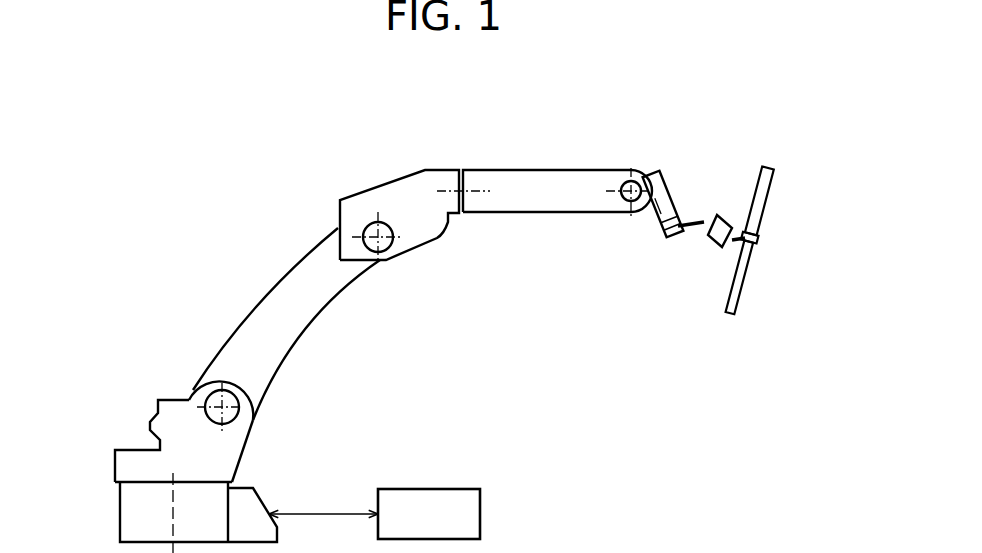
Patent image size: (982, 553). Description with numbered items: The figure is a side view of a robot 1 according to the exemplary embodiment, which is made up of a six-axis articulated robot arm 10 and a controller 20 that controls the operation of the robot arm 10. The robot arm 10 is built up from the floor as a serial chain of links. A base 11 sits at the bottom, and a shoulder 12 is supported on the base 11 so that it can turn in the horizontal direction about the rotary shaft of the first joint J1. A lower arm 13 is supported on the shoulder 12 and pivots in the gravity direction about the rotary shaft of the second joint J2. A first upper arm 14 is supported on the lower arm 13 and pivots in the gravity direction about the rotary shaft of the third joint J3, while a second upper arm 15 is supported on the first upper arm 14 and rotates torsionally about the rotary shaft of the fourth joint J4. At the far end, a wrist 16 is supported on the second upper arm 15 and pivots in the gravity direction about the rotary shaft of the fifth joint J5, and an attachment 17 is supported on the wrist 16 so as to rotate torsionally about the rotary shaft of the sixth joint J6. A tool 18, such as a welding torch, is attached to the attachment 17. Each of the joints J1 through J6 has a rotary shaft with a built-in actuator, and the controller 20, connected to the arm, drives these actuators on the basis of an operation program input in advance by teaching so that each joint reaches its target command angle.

The robot 1 is at (237, 173).
The robot arm 10 is at (173, 233).
The base 11 is at (120, 520).
The shoulder 12 is at (150, 422).
The lower arm 13 is at (250, 318).
The first upper arm 14 is at (387, 180).
The second upper arm 15 is at (512, 172).
The wrist 16 is at (655, 170).
The attachment 17 is at (682, 222).
The tool 18 is at (743, 282).
The controller 20 is at (450, 489).
The first joint J1 is at (172, 512).
The second joint J2 is at (192, 402).
The third joint J3 is at (378, 248).
The fourth joint J4 is at (477, 198).
The fifth joint J5 is at (628, 172).
The sixth joint J6 is at (670, 240).